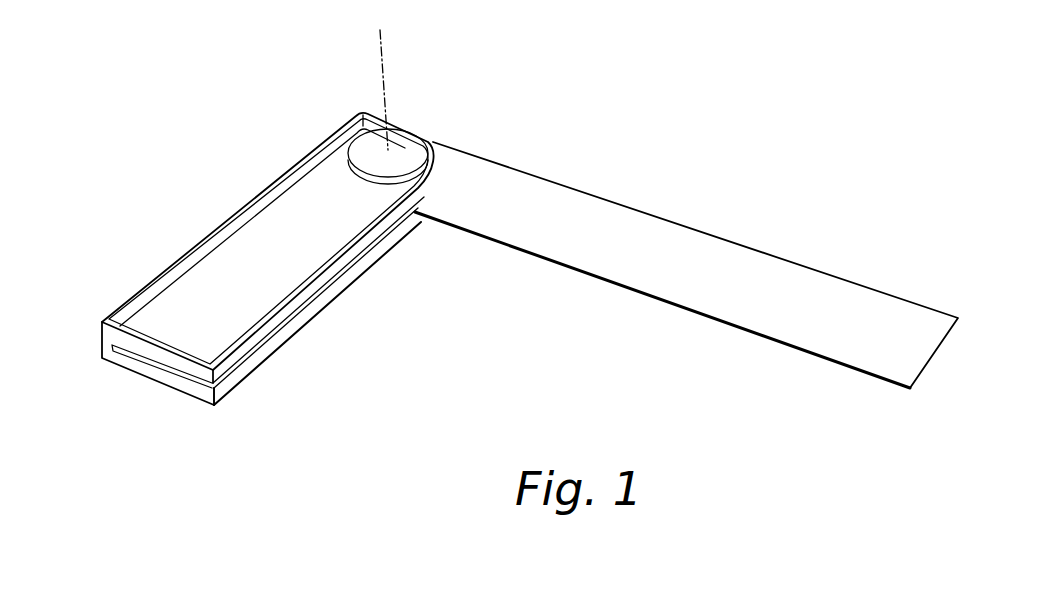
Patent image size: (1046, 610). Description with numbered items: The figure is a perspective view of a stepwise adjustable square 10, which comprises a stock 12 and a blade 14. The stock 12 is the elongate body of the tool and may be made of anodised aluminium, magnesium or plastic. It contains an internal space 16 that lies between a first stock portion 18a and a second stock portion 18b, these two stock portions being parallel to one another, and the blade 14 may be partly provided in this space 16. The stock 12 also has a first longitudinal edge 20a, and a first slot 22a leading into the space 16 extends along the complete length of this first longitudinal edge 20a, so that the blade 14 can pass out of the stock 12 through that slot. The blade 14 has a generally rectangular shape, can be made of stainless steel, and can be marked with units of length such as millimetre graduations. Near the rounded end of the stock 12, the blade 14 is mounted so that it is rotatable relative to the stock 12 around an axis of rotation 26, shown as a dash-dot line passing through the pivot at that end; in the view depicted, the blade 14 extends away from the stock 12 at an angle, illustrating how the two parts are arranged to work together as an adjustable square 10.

The stepwise adjustable square 10 is at (633, 101).
The stock 12 is at (161, 409).
The blade 14 is at (710, 295).
The space 16 is at (124, 357).
The first stock portion 18a is at (220, 380).
The second stock portion 18b is at (201, 402).
The first longitudinal edge 20a is at (293, 343).
The first slot 22a is at (362, 260).
The axis of rotation 26 is at (386, 92).